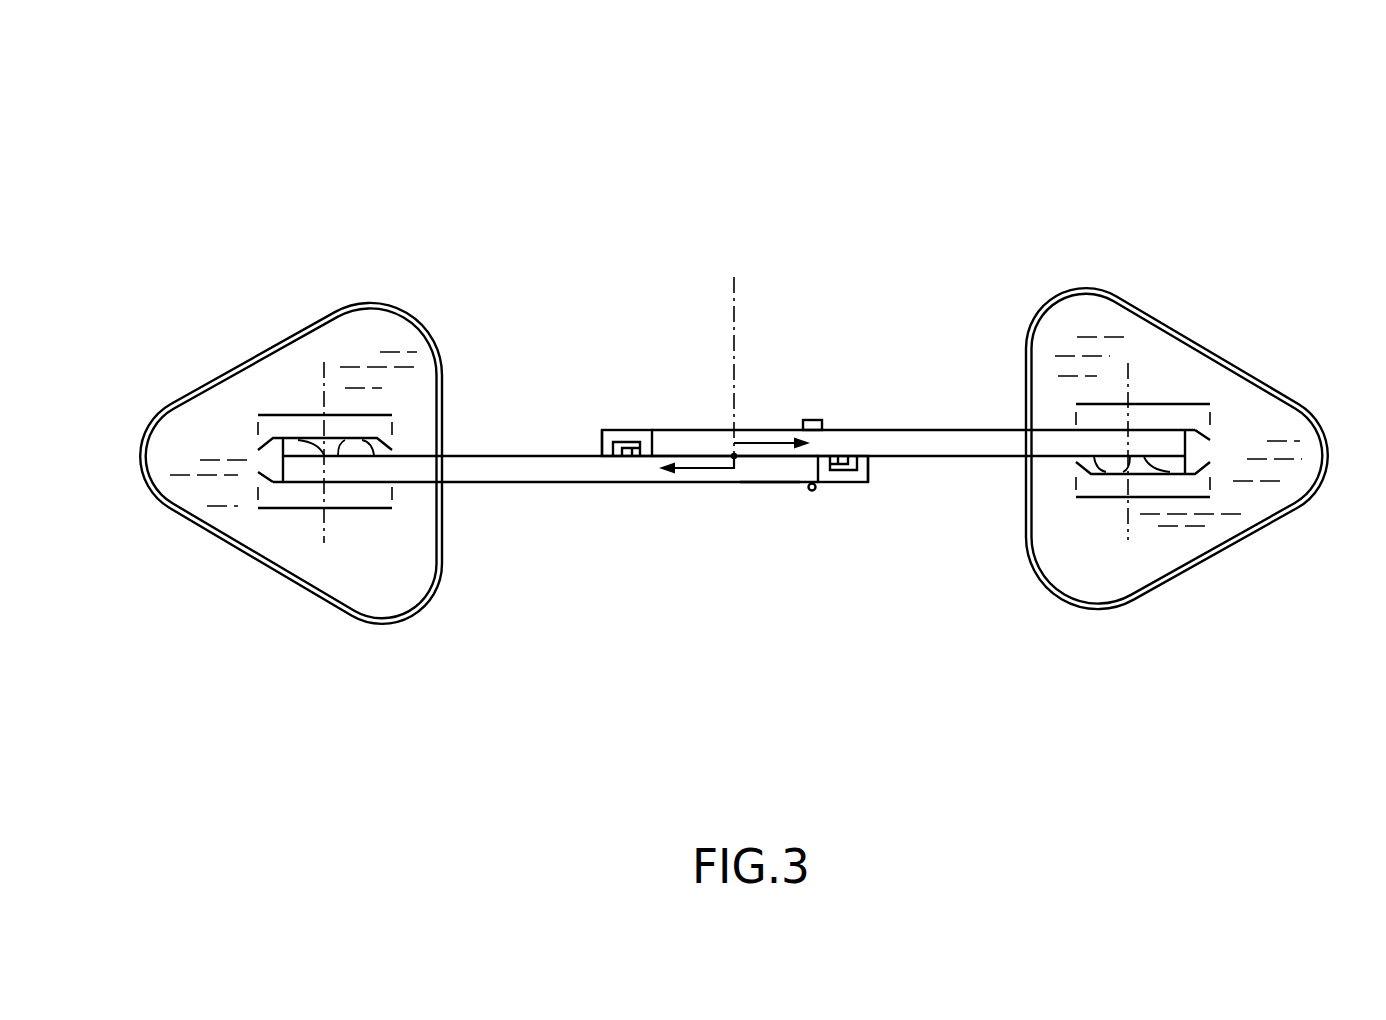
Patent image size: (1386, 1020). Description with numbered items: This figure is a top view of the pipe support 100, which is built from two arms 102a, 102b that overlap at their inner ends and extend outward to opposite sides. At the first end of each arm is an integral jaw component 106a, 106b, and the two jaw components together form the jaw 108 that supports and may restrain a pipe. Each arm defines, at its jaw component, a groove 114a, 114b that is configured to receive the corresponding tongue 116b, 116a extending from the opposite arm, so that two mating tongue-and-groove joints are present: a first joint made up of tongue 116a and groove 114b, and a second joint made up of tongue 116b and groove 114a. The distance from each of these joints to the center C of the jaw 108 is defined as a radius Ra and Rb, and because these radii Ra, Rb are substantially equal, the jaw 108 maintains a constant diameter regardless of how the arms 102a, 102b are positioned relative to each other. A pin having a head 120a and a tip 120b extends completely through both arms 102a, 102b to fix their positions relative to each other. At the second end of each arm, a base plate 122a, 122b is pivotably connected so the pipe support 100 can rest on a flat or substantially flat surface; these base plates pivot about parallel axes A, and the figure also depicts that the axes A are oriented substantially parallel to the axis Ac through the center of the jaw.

The pipe support 100 is at (734, 343).
The arm 102a is at (934, 390).
The arm 102b is at (480, 508).
The jaw component 106a is at (619, 447).
The jaw component 106b is at (863, 537).
The jaw 108 is at (765, 507).
The groove 114a is at (603, 421).
The groove 114b is at (883, 470).
The tongue 116a is at (842, 469).
The tongue 116b is at (622, 457).
The pin head 120a is at (818, 420).
The pin tip 120b is at (812, 491).
The base plate 122a is at (1190, 380).
The base plate 122b is at (245, 388).
The axes A is at (725, 467).
The axis Ac is at (740, 348).
The center of the jaw C is at (734, 456).
The radius Ra is at (776, 443).
The radius Rb is at (693, 469).